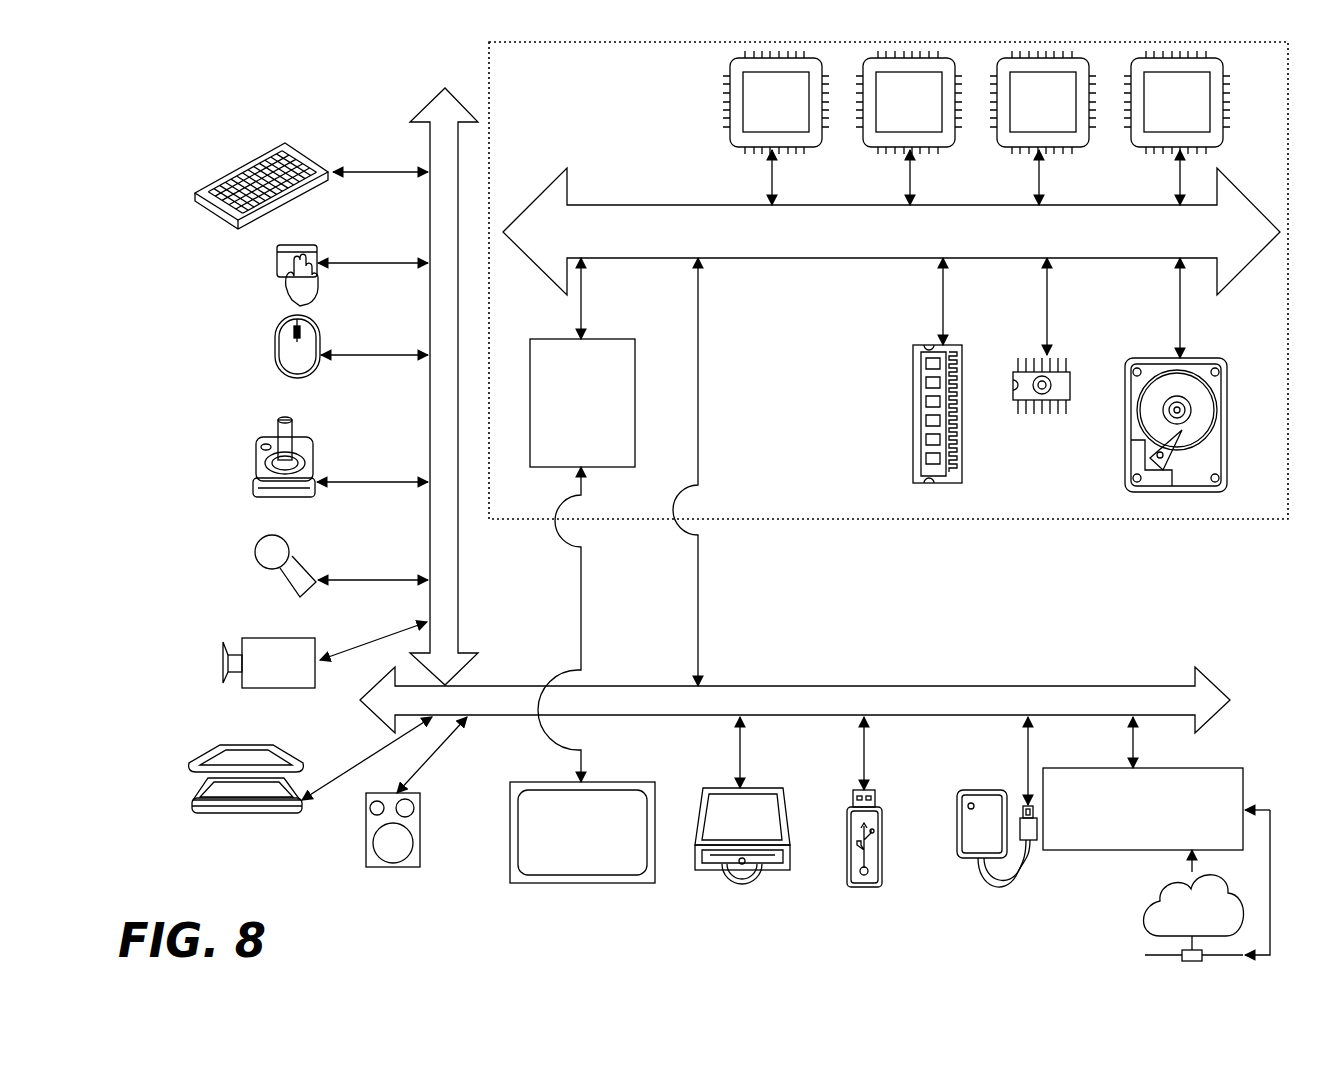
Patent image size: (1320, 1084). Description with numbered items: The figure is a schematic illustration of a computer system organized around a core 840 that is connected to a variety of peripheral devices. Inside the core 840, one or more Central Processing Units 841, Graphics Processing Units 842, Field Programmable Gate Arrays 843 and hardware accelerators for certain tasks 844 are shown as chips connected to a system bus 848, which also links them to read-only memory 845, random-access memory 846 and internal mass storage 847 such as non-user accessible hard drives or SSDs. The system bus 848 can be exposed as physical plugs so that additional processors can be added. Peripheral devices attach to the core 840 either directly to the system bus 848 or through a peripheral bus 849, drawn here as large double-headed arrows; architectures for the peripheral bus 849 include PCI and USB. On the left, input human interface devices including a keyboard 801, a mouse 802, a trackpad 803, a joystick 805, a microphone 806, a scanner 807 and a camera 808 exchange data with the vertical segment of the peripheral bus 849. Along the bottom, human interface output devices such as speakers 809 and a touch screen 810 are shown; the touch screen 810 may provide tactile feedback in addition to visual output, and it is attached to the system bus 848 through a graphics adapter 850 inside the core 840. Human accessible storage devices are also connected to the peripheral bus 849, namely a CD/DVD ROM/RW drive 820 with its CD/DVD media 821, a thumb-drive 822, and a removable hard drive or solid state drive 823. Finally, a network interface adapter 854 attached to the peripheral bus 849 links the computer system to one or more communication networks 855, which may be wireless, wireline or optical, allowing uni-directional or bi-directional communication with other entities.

The keyboard 801 is at (193, 200).
The mouse 802 is at (275, 345).
The trackpad 803 is at (277, 262).
The joystick 805 is at (253, 478).
The microphone 806 is at (255, 557).
The scanner 807 is at (192, 805).
The camera 808 is at (228, 663).
The speakers 809 is at (393, 867).
The touch screen 810 is at (581, 883).
The CD/DVD ROM/RW 820 is at (741, 823).
The CD/DVD media 821 is at (725, 880).
The thumb-drive 822 is at (865, 887).
The removable hard drive or solid state drive 823 is at (965, 858).
The core 840 is at (880, 519).
The Central Processing Unit 841 is at (762, 124).
The Graphics Processing Unit 842 is at (895, 124).
The Field Programmable Gate Array 843 is at (1029, 124).
The hardware accelerator 844 is at (1163, 124).
The read-only memory 845 is at (1040, 414).
The random-access memory 846 is at (910, 440).
The internal mass storage 847 is at (1137, 358).
The system bus 848 is at (957, 242).
The peripheral bus 849 is at (430, 135).
The graphics adapter 850 is at (569, 438).
The network interface adapter 854 is at (1129, 834).
The communication network 855 is at (1147, 918).